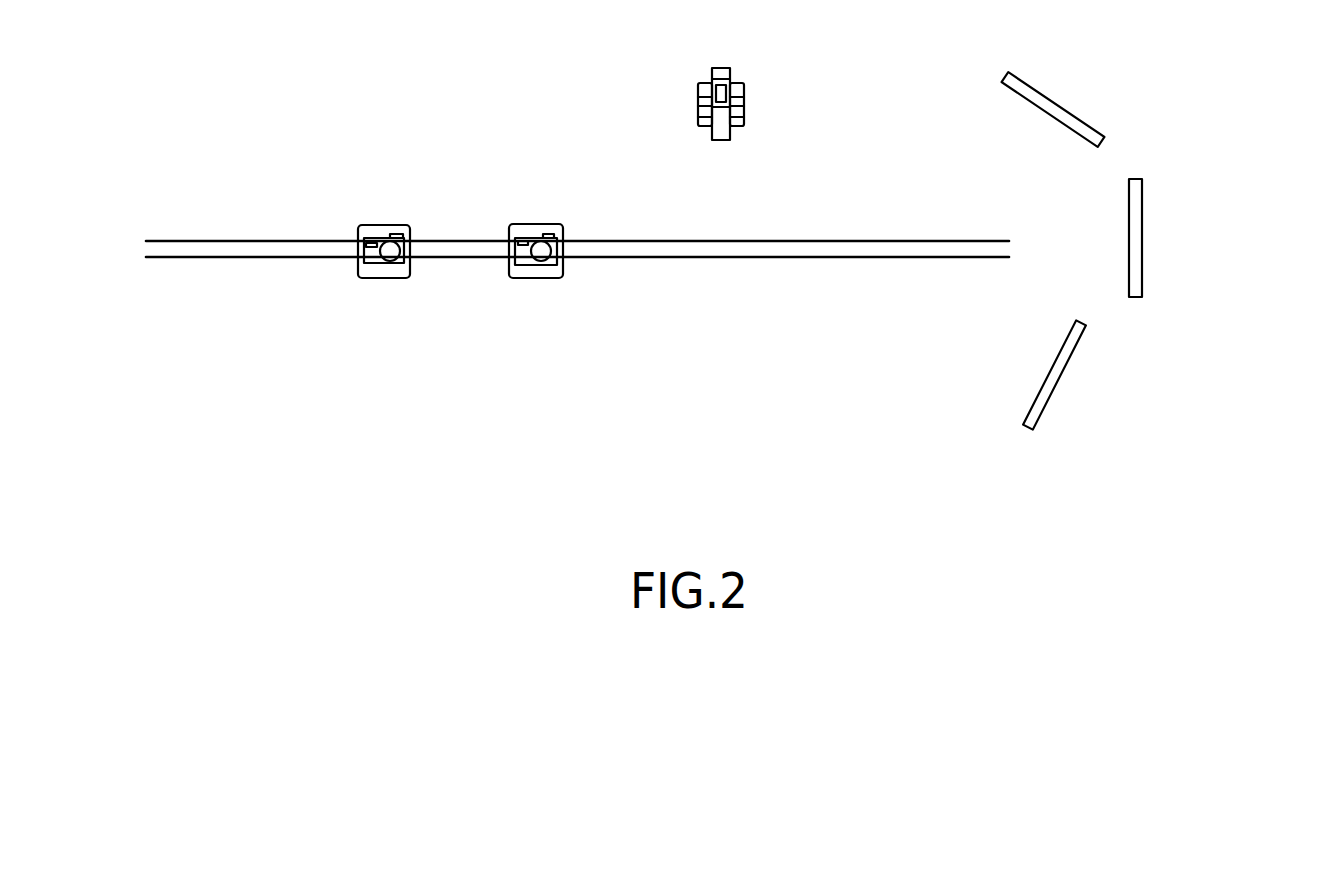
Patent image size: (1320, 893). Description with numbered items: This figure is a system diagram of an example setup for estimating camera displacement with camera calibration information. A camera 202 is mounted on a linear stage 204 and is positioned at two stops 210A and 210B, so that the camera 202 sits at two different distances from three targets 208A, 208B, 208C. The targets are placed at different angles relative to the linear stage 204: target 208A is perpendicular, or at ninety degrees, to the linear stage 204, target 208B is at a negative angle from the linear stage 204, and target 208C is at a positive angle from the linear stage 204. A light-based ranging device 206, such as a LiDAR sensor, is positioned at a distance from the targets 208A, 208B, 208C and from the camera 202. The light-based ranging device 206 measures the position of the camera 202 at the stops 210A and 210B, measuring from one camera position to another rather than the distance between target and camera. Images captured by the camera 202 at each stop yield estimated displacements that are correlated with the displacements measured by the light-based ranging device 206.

The camera 202 is at (495, 280).
The linear stage 204 is at (227, 257).
The light-based ranging device 206 is at (738, 80).
The target 208A is at (1142, 248).
The target 208B is at (1085, 122).
The target 208C is at (1053, 393).
The stop 210A is at (383, 278).
The stop 210B is at (557, 278).